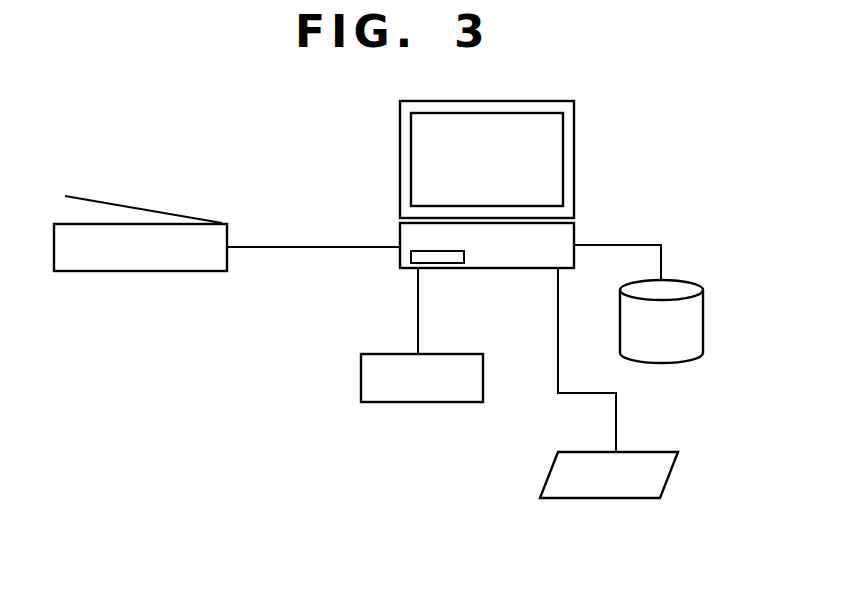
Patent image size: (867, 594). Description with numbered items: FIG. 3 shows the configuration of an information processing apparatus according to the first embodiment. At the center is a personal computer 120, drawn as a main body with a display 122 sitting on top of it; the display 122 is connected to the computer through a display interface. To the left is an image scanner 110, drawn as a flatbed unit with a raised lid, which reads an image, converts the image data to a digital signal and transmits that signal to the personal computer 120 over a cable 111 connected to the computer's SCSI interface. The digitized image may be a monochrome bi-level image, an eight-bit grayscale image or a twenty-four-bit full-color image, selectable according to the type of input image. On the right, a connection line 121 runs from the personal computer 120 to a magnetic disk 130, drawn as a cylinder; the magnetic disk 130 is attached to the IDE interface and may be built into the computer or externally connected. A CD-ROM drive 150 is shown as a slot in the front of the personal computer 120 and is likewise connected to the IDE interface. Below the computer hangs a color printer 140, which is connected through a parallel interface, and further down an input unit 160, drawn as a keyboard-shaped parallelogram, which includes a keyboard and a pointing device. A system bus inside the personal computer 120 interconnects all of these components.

The image scanner 110 is at (140, 262).
The cable 111 is at (310, 248).
The personal computer 120 is at (575, 228).
The connection line 121 is at (662, 260).
The display 122 is at (575, 158).
The magnetic disk 130 is at (695, 333).
The color printer 140 is at (421, 402).
The CD-ROM drive 150 is at (440, 263).
The input unit 160 is at (612, 498).